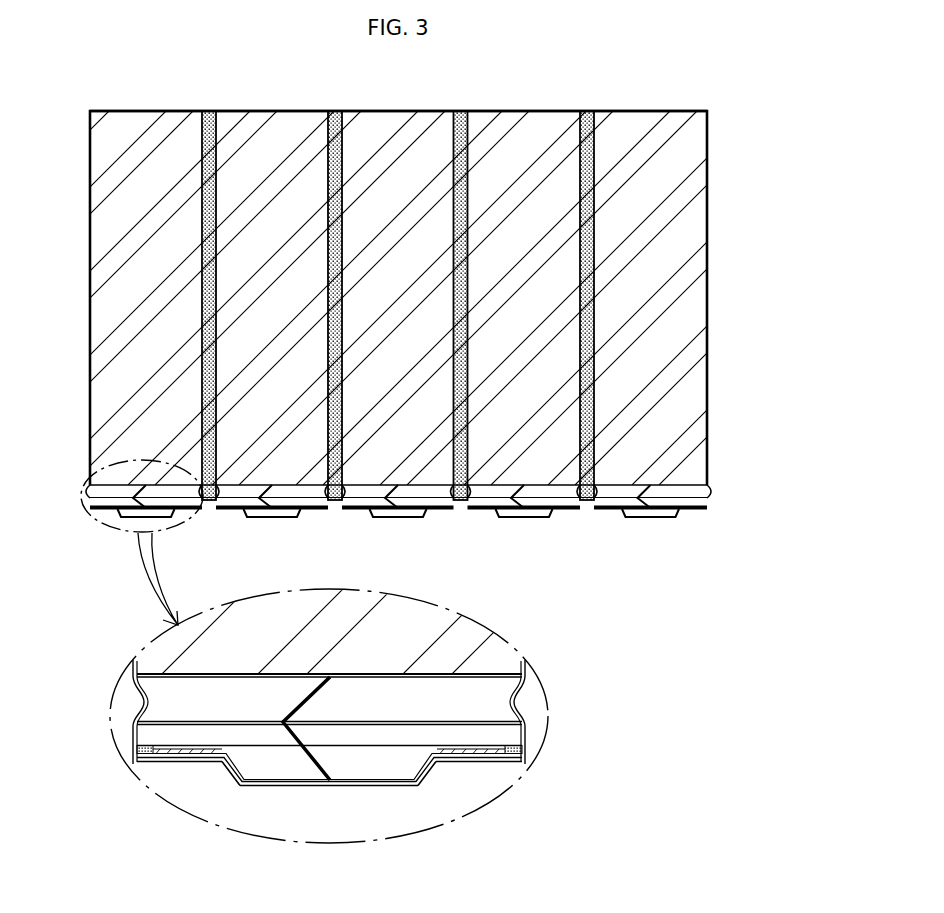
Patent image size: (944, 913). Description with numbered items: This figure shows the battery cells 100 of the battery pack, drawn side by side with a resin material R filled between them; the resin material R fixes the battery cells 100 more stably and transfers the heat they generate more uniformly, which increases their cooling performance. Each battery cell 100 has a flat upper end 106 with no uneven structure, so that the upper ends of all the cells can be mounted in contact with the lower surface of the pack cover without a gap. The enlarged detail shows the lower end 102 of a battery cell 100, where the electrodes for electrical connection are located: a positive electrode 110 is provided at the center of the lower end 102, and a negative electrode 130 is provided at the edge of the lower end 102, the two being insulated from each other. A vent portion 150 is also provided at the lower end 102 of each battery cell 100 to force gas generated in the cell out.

The battery cell 100 is at (105, 327).
The upper end 106 is at (146, 111).
The resin material R is at (590, 161).
The lower end 102 is at (465, 757).
The positive electrode 110 is at (322, 786).
The negative electrode 130 is at (517, 757).
The vent portion 150 is at (437, 770).